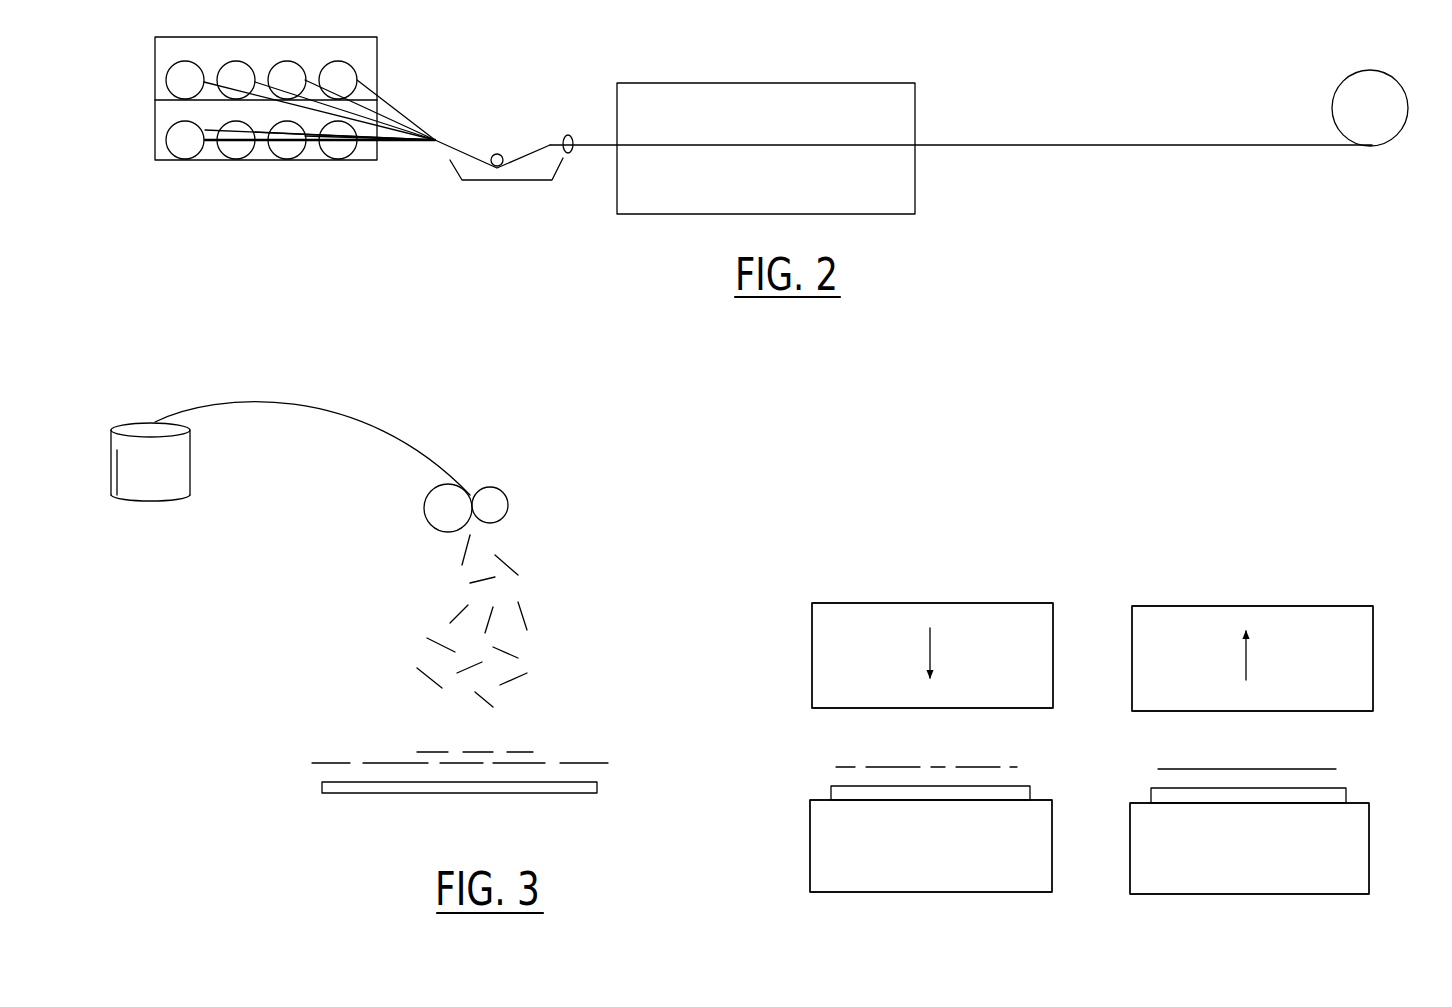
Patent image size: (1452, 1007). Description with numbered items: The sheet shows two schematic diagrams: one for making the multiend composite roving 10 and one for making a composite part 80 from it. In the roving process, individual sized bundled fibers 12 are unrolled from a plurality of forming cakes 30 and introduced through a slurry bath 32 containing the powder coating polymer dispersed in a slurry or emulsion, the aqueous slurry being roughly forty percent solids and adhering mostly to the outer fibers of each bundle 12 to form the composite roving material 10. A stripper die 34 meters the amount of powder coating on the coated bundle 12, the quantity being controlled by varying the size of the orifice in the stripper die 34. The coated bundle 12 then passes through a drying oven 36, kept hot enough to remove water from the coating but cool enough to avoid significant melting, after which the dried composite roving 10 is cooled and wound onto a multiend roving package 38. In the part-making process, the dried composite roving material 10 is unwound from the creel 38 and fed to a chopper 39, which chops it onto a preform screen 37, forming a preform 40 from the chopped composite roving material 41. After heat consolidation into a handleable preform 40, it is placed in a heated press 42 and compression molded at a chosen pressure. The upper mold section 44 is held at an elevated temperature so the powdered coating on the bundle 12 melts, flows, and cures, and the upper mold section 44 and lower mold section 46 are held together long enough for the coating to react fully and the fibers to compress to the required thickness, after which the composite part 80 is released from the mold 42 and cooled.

In FIG. 2, the composite roving 10 is at (1053, 145).
In FIG. 3, the composite roving 10 is at (352, 340).
In FIG. 2, the bundled fibers 12 is at (400, 110).
In FIG. 2, the forming cakes 30 is at (283, 153).
In FIG. 2, the resin bath 32 is at (532, 180).
In FIG. 2, the stripper die 34 is at (570, 132).
In FIG. 2, the drying oven 36 is at (806, 82).
In FIG. 3, the preform screen 37 is at (482, 795).
In FIG. 2, the multiend roving package 38 is at (1345, 92).
In FIG. 3, the multiend roving package 38 is at (147, 527).
In FIG. 3, the chopper 39 is at (492, 477).
In FIG. 3, the preform 40 is at (368, 760).
In FIG. 3, the chopped composite roving material 41 is at (460, 610).
In FIG. 3, the heated press 42 is at (1126, 528).
In FIG. 3, the upper mold section 44 is at (878, 602).
In FIG. 3, the lower mold section 46 is at (815, 826).
In FIG. 3, the composite part 80 is at (1293, 767).